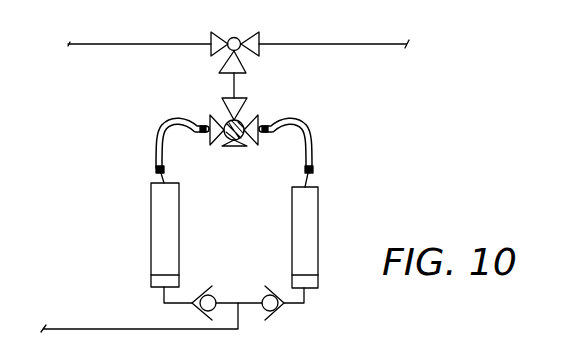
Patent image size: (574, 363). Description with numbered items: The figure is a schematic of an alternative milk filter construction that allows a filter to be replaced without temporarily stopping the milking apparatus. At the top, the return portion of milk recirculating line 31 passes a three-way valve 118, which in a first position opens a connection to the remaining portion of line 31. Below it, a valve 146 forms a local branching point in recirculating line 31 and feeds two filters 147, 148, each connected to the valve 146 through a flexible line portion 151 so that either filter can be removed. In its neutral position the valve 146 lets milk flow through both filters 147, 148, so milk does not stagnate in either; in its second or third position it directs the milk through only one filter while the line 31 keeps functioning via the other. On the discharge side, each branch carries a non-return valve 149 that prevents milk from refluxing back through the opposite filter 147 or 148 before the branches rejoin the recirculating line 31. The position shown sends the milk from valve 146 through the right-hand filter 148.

The milk recirculating line 31 is at (388, 45).
The three-way valve 118 is at (213, 54).
The valve 146 is at (253, 107).
The filter 147 is at (155, 202).
The filter 148 is at (318, 206).
The non-return valve 149 is at (263, 293).
The flexible line portion 151 is at (300, 147).